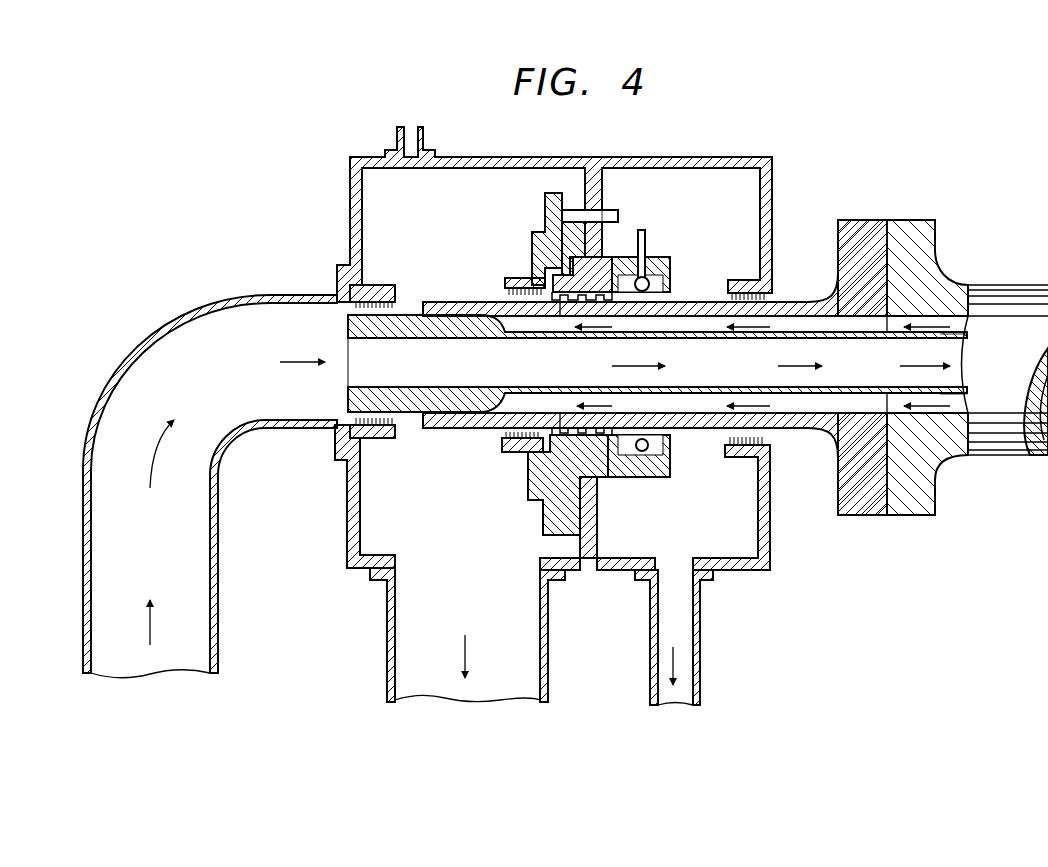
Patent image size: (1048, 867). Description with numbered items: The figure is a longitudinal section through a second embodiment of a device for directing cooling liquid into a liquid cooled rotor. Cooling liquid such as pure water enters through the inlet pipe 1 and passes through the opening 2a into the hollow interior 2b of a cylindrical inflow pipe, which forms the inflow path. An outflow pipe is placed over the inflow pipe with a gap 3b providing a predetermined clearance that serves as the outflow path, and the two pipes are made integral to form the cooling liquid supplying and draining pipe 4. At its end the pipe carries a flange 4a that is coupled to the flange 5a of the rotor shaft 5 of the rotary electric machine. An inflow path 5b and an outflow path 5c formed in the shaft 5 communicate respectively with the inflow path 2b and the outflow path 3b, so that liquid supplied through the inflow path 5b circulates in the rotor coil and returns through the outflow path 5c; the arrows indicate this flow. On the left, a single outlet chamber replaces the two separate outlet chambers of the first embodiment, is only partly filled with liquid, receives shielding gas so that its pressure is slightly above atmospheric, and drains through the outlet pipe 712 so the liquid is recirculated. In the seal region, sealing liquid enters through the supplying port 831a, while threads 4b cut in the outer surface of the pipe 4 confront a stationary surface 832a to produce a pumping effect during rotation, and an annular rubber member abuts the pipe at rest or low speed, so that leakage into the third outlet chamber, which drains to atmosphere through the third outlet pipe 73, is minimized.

The inlet pipe 1 is at (218, 595).
The opening 2a is at (347, 370).
The hollow interior 2b is at (395, 392).
The gap 3b is at (503, 322).
The cooling liquid supplying and draining pipe 4 is at (728, 379).
The flange 4a is at (858, 220).
The threads 4b is at (613, 303).
The shaft 5 is at (1000, 284).
The flange 5a is at (916, 220).
The inflow path 5b is at (940, 340).
The outflow path 5c is at (952, 415).
The third outlet pipe 73 is at (650, 668).
The outlet pipe 712 is at (387, 655).
The sealing liquid supplying port 831a is at (570, 210).
The stationary surface 832a is at (560, 303).